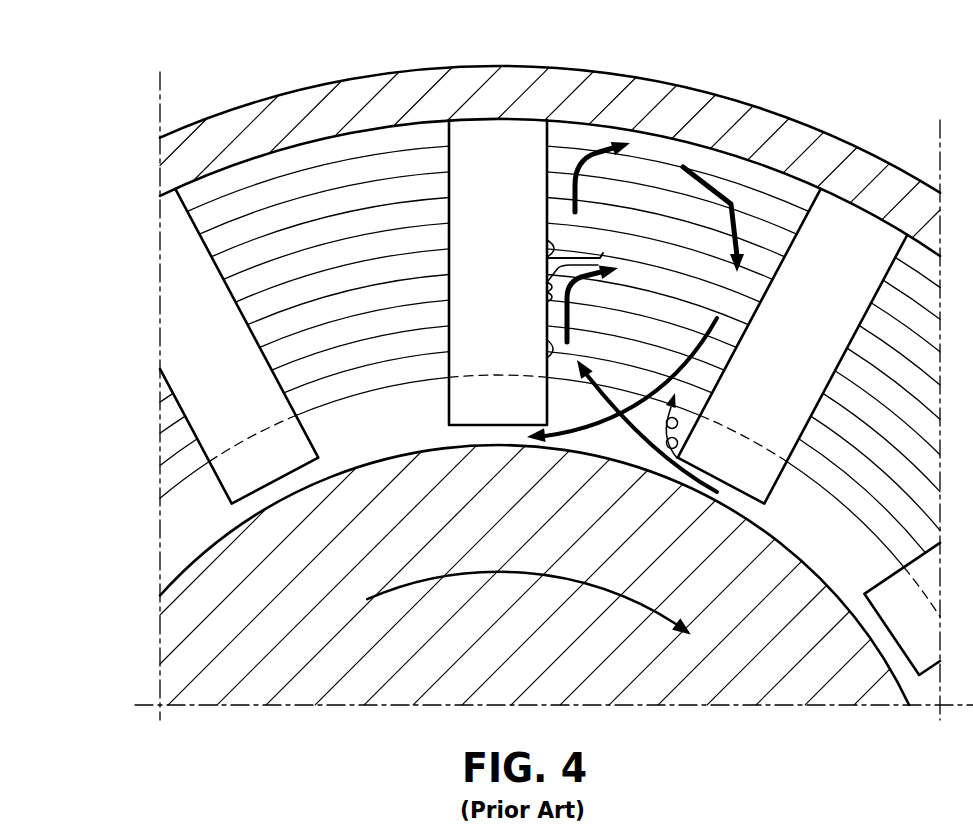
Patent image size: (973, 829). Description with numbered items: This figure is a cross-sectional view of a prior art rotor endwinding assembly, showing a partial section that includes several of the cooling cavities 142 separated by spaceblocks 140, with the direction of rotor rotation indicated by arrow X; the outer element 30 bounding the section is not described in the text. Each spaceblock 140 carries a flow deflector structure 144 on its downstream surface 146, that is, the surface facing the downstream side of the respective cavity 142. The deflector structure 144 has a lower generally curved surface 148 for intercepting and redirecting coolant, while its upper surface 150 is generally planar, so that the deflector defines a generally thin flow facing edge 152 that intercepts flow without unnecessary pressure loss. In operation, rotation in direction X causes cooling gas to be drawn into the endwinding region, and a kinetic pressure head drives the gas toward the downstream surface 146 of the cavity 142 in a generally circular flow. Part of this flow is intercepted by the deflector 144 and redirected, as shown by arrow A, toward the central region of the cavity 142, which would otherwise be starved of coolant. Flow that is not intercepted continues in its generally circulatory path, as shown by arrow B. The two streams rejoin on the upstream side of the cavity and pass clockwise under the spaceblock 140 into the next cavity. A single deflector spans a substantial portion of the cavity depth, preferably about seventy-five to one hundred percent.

The stator core 30 is at (775, 113).
The spaceblock 140 is at (505, 127).
The cavity 142 is at (318, 185).
The flow deflector structure 144 is at (547, 240).
The downstream surface 146 is at (547, 357).
The lower generally curved surface 148 is at (547, 298).
The upper surface 150 is at (577, 257).
The flow facing edge 152 is at (608, 251).
The arrow A is at (575, 278).
The arrow B is at (585, 157).
The direction of rotation X is at (529, 587).